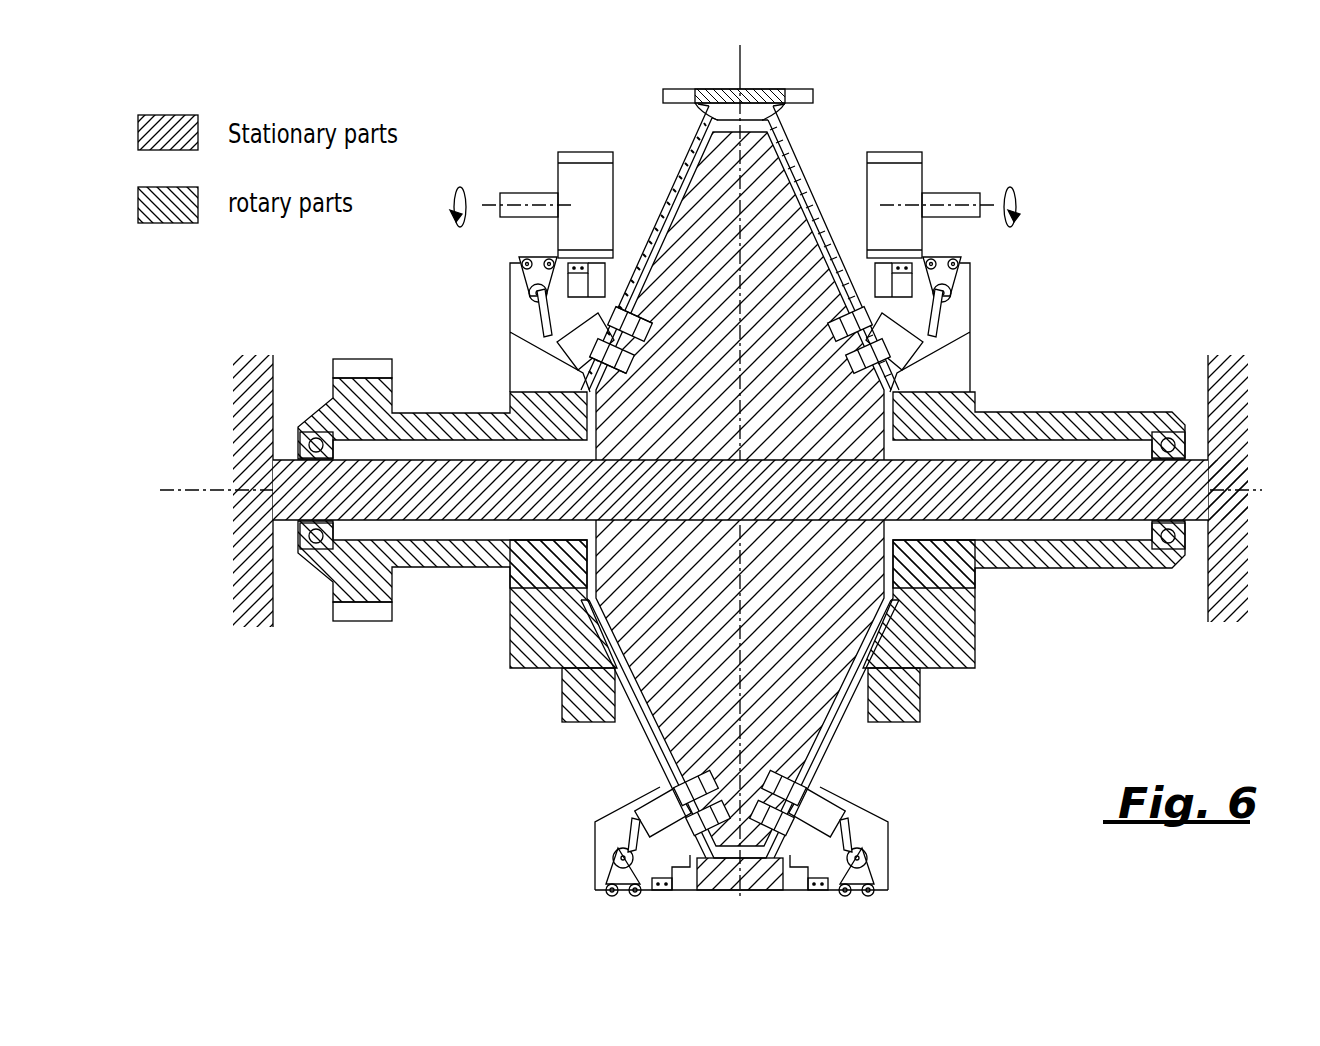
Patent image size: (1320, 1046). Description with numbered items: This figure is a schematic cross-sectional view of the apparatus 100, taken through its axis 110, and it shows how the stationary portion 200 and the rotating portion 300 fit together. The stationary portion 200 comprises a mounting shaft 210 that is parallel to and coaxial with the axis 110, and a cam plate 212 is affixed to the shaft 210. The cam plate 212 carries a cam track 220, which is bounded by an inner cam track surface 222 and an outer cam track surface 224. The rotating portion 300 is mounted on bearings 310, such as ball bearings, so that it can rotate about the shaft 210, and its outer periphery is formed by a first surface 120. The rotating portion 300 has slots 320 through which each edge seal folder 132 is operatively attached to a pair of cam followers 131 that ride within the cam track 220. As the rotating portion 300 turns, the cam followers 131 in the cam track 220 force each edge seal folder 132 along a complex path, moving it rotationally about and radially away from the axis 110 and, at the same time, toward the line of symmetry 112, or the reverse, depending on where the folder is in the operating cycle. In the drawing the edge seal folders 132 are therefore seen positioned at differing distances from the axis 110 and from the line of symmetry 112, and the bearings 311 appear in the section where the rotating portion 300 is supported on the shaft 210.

The apparatus 100 is at (1046, 182).
The axis 110 is at (172, 488).
The line of symmetry 112 is at (736, 62).
The first surface 120 is at (770, 88).
The cam followers 131 is at (637, 350).
The edge seal folders 132 is at (994, 286).
The stationary portion 200 is at (1116, 524).
The mounting shaft 210 is at (1062, 510).
The cam plate 212 is at (702, 190).
The cam track 220 is at (640, 340).
The inner cam track surface 222 is at (607, 384).
The outer cam track surface 224 is at (634, 320).
The rotating portion 300 is at (813, 190).
The bearings 310 is at (584, 710).
The bearing 311 is at (300, 428).
The slots 320 is at (585, 168).